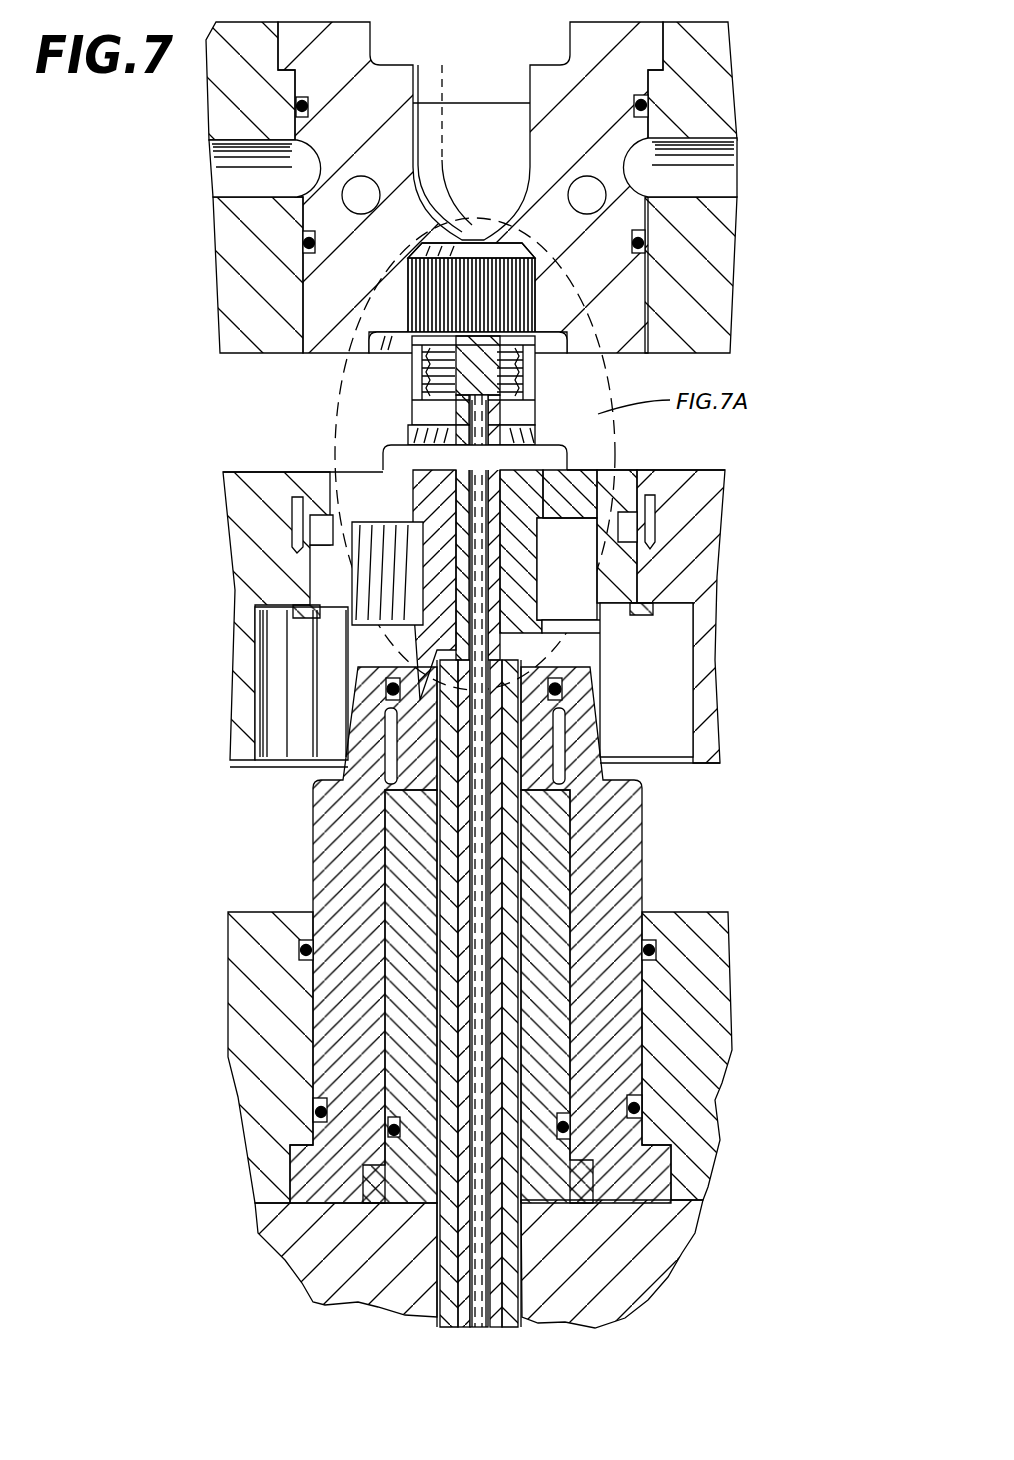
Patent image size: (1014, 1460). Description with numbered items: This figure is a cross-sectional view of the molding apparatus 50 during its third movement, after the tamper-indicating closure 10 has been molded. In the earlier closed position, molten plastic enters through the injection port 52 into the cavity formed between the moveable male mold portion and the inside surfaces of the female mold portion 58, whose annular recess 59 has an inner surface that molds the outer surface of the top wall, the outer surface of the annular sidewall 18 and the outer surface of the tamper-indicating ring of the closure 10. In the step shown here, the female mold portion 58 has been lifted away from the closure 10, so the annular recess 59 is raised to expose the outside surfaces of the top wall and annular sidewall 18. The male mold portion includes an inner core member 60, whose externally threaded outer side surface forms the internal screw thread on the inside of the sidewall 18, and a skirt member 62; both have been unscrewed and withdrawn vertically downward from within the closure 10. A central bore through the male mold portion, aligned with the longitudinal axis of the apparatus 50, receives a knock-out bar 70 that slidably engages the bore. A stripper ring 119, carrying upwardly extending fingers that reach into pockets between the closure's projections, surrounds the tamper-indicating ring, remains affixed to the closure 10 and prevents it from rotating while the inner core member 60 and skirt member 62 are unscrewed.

The tamper-indicating closure 10 is at (524, 414).
The annular sidewall 18 is at (515, 363).
The molding apparatus 50 is at (205, 238).
The injection port 52 is at (487, 130).
The female mold portion 58 is at (613, 320).
The annular recess 59 is at (537, 297).
The inner core member 60 is at (429, 485).
The skirt member 62 is at (418, 559).
The knock-out bar 70 is at (452, 372).
The stripper ring 119 is at (543, 464).